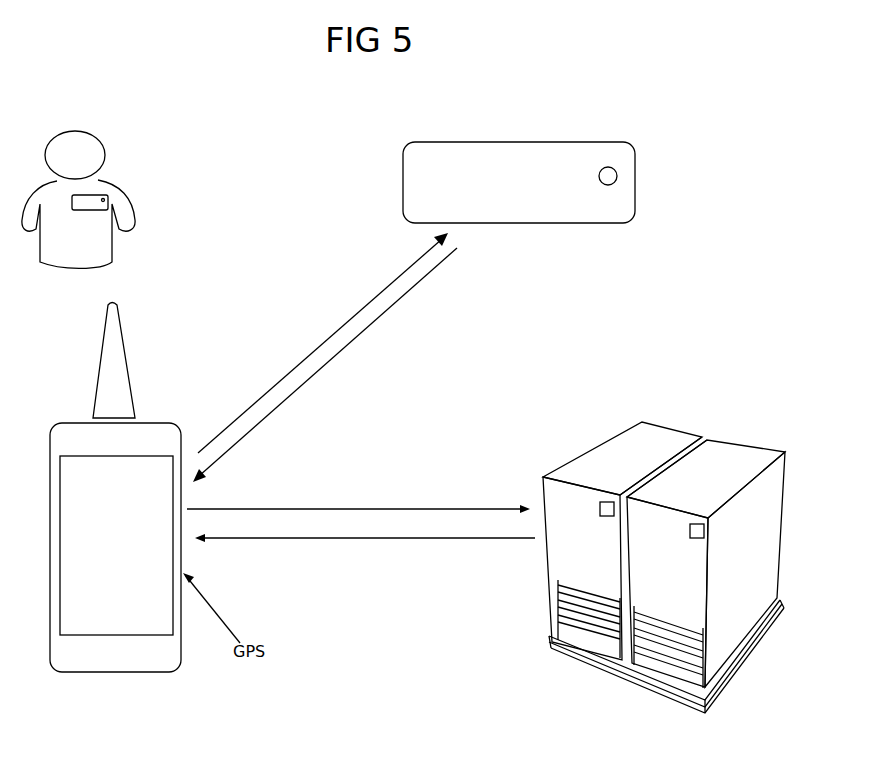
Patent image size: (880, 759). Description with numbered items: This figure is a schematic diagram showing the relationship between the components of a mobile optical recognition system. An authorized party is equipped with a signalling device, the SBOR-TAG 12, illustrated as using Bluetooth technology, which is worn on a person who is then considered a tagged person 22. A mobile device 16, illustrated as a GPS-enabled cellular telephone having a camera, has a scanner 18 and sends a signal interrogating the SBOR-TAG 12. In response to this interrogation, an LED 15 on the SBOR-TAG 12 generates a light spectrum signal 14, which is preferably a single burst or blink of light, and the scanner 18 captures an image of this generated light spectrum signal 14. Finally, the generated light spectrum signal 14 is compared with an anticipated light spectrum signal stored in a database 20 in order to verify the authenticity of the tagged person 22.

The SBOR-TAG 12 is at (520, 140).
The light spectrum signal 14 is at (332, 335).
The LED 15 is at (616, 183).
The mobile device 16 is at (46, 490).
The scanner 18 is at (100, 362).
The database 20 is at (729, 438).
The tagged person 22 is at (98, 143).